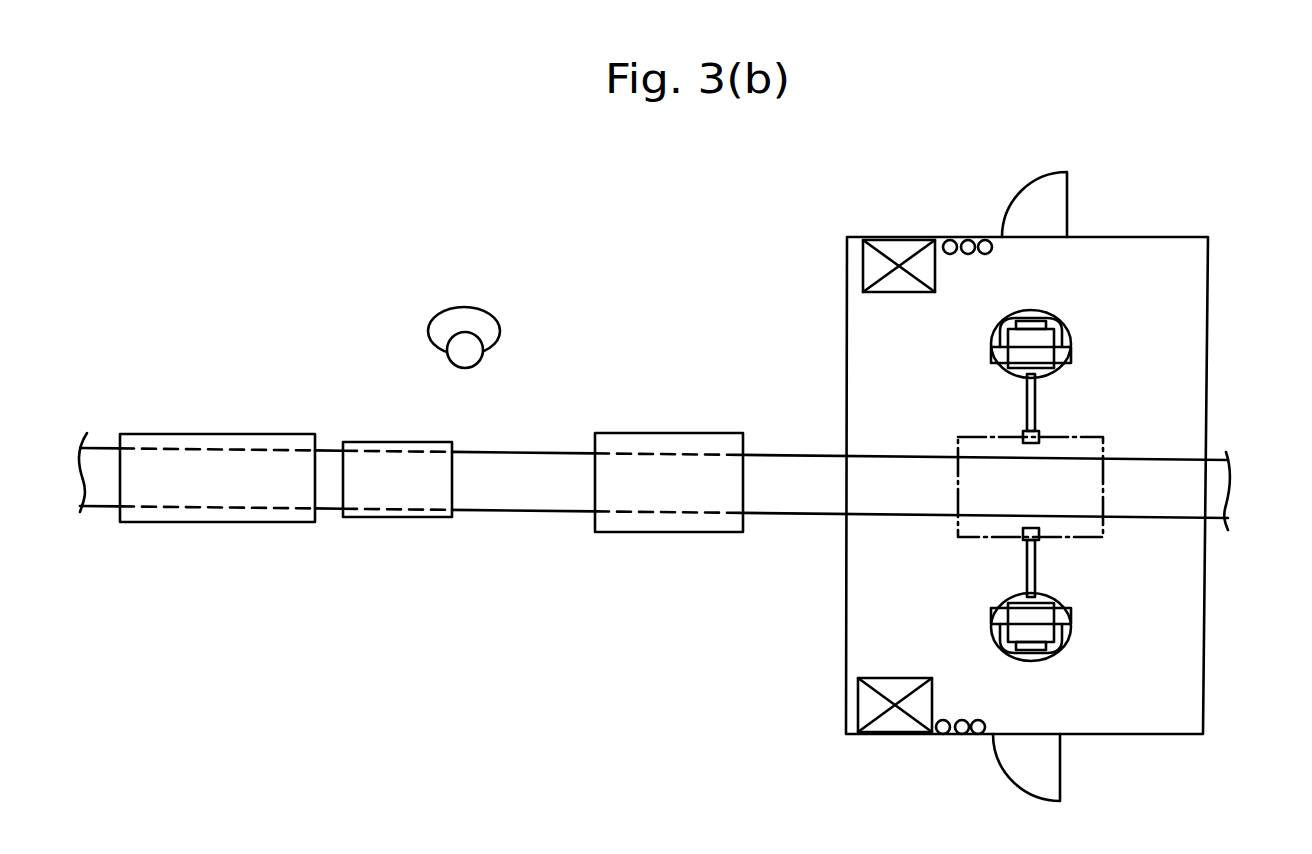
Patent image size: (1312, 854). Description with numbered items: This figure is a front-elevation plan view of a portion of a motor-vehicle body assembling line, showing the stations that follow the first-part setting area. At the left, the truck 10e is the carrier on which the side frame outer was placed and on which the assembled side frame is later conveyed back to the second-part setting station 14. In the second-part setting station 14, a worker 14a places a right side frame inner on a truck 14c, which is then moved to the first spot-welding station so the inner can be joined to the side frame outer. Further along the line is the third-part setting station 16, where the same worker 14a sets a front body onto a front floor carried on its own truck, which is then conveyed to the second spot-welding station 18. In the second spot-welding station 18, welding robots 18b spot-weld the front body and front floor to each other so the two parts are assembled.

The truck 10e is at (218, 433).
The second-part setting station 14 is at (441, 500).
The worker 14a is at (488, 310).
The truck 14c is at (393, 442).
The third-part setting station 16 is at (669, 504).
The second spot-welding station 18 is at (1064, 510).
The welding robots 18b is at (1070, 632).